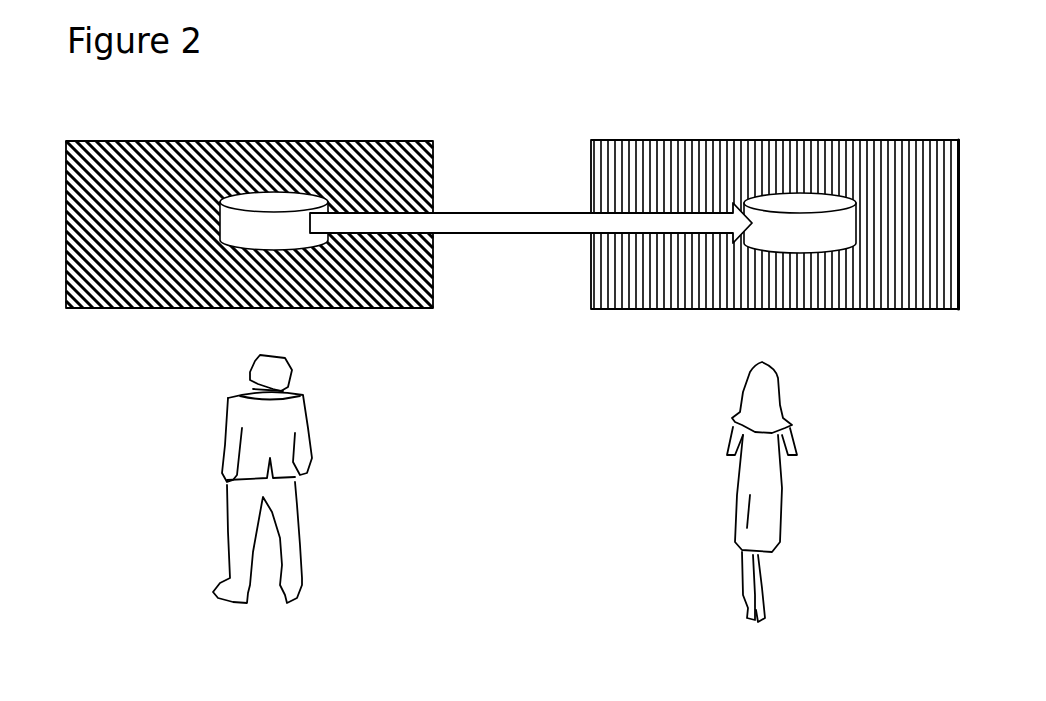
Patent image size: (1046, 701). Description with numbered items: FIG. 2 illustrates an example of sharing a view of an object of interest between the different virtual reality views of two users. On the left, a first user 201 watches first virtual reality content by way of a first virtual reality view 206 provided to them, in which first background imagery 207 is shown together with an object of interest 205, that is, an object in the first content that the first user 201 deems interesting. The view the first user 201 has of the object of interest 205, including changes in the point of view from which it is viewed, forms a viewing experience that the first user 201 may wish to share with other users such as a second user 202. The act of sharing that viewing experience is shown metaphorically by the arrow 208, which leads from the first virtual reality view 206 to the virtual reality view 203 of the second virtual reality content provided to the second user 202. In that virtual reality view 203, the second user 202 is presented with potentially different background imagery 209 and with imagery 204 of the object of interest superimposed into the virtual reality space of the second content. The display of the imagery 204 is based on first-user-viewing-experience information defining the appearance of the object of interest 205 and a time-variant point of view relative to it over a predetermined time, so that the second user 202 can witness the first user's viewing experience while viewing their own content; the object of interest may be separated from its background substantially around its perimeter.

The first user 201 is at (282, 512).
The second user 202 is at (738, 533).
The virtual reality view 203 is at (907, 188).
The imagery of the object of interest 204 is at (800, 203).
The object of interest 205 is at (277, 203).
The first virtual reality view 206 is at (165, 141).
The first background imagery 207 is at (128, 258).
The arrow 208 is at (515, 223).
The background imagery 209 is at (658, 277).